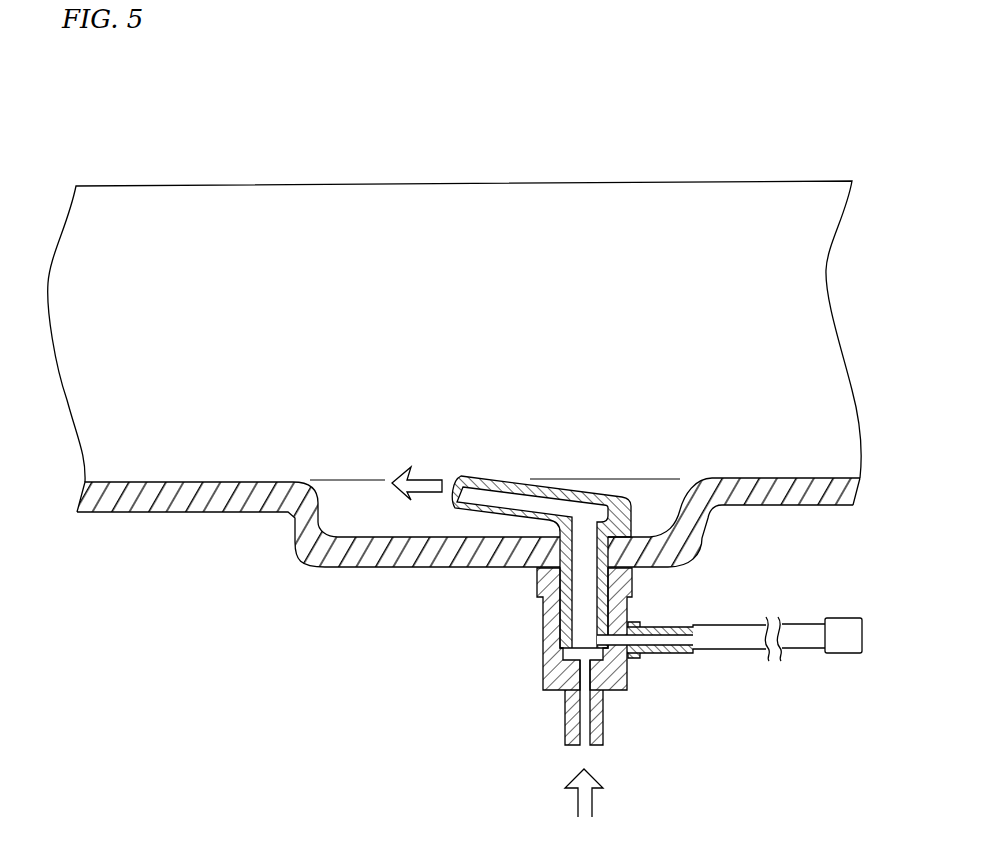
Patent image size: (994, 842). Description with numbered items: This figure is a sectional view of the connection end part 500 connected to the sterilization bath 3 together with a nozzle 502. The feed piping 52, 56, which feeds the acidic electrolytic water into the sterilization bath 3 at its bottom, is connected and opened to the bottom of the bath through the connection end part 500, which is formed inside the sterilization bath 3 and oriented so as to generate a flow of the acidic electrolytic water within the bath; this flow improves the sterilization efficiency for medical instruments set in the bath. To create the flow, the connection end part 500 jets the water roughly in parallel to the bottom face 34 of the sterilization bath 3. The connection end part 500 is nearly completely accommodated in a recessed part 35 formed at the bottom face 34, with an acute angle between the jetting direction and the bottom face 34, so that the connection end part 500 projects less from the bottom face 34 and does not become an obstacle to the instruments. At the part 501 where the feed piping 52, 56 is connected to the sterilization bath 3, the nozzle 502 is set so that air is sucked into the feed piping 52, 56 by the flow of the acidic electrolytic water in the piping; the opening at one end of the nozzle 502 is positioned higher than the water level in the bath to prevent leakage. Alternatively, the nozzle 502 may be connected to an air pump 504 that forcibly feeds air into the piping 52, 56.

The sterilization bath 3 is at (152, 513).
The bottom face 34 is at (221, 482).
The recessed part 35 is at (378, 520).
The connection end part 500 is at (508, 482).
The connection part 501 is at (543, 649).
The nozzle 502 is at (681, 627).
The air pump 504 is at (835, 655).
The feed piping 52 is at (530, 702).
The feed piping 56 is at (565, 728).